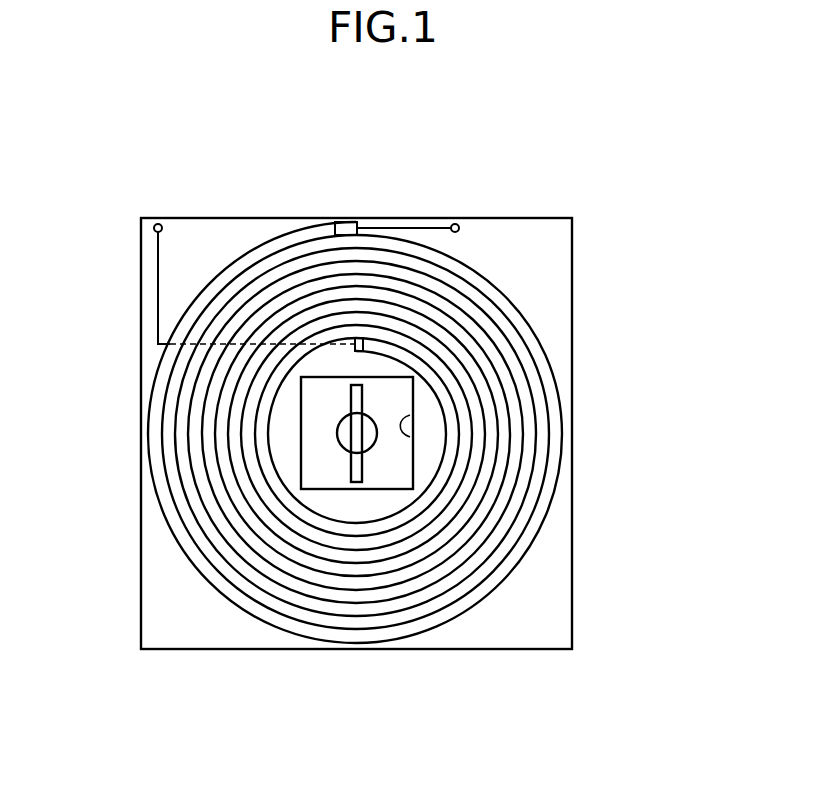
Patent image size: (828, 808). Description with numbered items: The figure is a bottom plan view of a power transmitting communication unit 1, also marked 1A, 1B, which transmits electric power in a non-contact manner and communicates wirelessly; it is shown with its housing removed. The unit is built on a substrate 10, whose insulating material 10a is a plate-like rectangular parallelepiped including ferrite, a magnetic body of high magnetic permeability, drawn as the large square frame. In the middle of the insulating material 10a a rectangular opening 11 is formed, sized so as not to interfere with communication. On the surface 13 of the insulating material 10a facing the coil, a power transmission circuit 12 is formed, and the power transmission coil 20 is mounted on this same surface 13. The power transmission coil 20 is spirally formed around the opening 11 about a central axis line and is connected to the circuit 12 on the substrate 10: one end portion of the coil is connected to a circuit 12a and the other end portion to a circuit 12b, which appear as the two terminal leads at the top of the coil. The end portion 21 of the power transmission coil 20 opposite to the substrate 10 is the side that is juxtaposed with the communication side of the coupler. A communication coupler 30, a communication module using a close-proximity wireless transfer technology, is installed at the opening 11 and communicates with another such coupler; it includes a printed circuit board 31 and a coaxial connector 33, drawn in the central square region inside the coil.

The power transmitting communication unit 1 is at (513, 159).
The antenna device (first embodiment) 1A is at (364, 439).
The antenna device (second embodiment) 1B is at (364, 439).
The substrate 10 is at (557, 280).
The insulating material 10a is at (557, 235).
The opening 11 is at (410, 437).
The power transmission circuit 12 is at (299, 255).
The circuit 12a is at (406, 228).
The circuit 12b is at (160, 258).
The surface 13 is at (558, 540).
The power transmission coil 20 is at (531, 571).
The end portion 21 is at (483, 575).
The communication coupler 30 is at (344, 472).
The printed circuit board 31 is at (356, 433).
The coaxial connector 33 is at (337, 433).